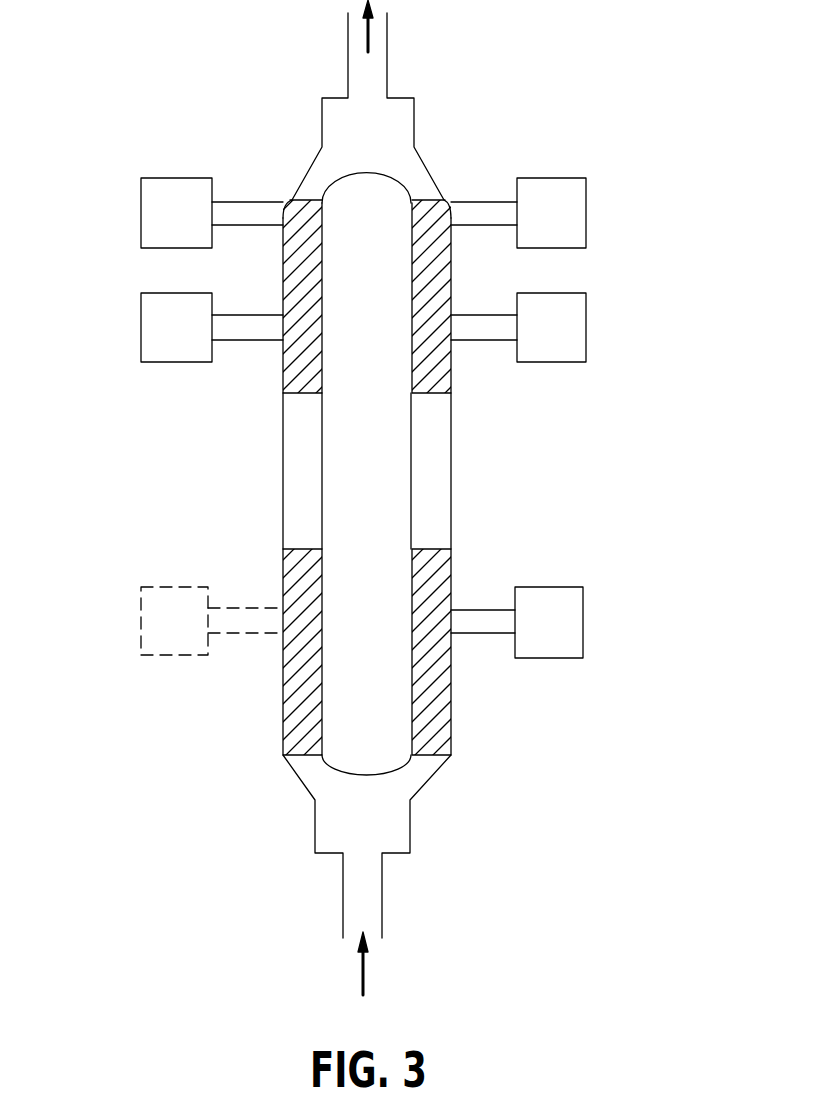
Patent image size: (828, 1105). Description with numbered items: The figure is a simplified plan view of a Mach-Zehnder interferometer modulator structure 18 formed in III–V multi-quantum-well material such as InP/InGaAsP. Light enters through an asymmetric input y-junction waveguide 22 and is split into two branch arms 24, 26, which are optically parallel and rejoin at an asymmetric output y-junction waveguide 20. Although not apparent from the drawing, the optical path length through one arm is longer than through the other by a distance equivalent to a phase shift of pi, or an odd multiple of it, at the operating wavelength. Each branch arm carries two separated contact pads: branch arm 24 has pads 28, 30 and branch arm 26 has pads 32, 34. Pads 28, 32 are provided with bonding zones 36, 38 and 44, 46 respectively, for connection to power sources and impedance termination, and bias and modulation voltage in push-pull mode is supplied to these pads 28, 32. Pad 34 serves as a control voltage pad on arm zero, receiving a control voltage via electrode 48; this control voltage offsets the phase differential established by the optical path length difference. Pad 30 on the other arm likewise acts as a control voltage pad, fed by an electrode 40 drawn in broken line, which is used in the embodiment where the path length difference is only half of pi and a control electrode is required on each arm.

The modulator structure 18 is at (552, 136).
The asymmetric output y-junction waveguide 20 is at (405, 127).
The asymmetric input y-junction waveguide 22 is at (403, 835).
The branch arm 24 is at (287, 472).
The branch arm 26 is at (443, 468).
The contact pad 28 is at (293, 372).
The control voltage pad 30 is at (287, 588).
The contact pad 32 is at (437, 372).
The control voltage pad 34 is at (438, 593).
The bonding zone 36 is at (158, 217).
The bonding zone 38 is at (151, 324).
The electrode 40 is at (147, 621).
The bonding zone 44 is at (578, 213).
The bonding zone 46 is at (575, 322).
The electrode 48 is at (572, 613).